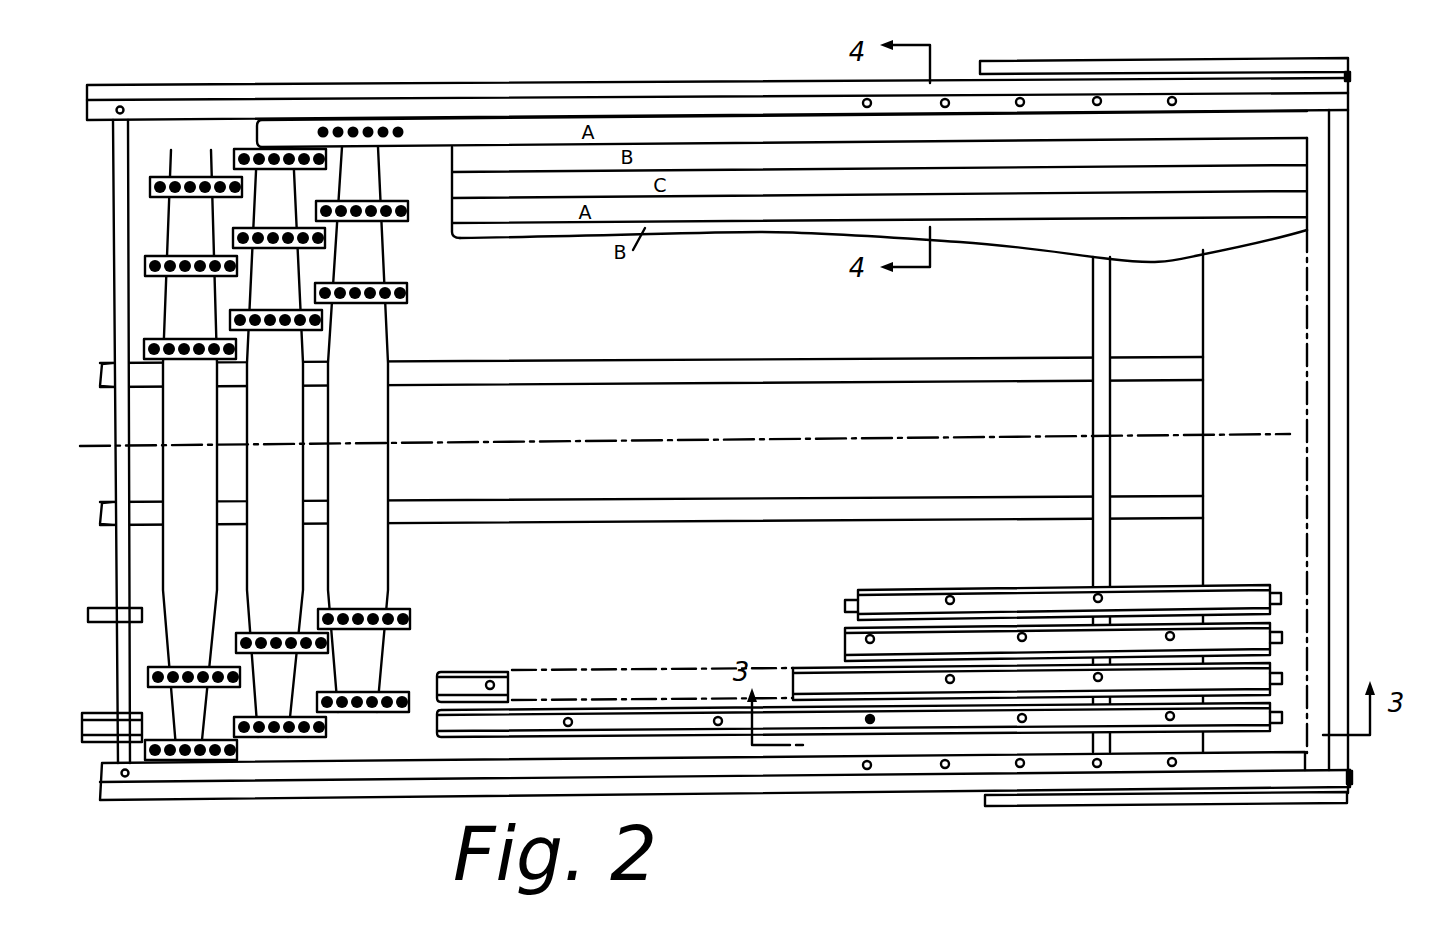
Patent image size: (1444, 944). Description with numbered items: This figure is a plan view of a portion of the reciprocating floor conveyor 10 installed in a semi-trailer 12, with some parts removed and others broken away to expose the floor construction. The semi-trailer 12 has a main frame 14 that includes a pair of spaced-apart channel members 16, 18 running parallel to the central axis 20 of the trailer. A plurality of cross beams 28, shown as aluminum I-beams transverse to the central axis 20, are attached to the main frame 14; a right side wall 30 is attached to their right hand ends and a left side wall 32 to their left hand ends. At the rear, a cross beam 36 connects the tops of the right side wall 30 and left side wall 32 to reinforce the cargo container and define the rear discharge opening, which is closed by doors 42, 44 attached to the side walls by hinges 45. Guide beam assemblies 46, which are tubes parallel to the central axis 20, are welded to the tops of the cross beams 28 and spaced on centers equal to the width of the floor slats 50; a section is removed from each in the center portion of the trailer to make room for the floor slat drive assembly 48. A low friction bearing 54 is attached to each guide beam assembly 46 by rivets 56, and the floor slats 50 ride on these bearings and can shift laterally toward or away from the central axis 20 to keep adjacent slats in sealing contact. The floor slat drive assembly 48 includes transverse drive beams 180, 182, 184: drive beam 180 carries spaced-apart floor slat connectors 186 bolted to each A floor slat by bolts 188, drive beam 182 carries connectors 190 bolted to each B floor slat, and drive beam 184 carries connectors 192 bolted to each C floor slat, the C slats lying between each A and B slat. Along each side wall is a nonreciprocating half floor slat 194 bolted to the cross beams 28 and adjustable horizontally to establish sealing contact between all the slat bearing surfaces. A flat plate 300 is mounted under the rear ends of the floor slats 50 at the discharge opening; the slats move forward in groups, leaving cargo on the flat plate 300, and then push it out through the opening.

The reciprocating floor conveyor 10 is at (1322, 147).
The semi-trailer 12 is at (725, 798).
The main frame 14 is at (1172, 343).
The channel member 16 is at (975, 370).
The channel member 18 is at (1067, 508).
The central axis 20 is at (1257, 435).
The cross beam 28 is at (1097, 315).
The right side wall 30 is at (652, 88).
The left side wall 32 is at (860, 787).
The cross beam 36 is at (1342, 212).
The door 42 is at (1203, 40).
The door 44 is at (1187, 798).
The hinge 45 is at (1350, 72).
The guide beam assembly 46 is at (1282, 638).
The floor slat drive assembly 48 is at (219, 408).
The floor slat 50 is at (732, 125).
The bearing 54 is at (678, 636).
The rivet 56 is at (948, 598).
The transverse drive beam 180 is at (416, 429).
The transverse drive beam 182 is at (330, 443).
The transverse drive beam 184 is at (207, 490).
The floor slat connector 186 is at (410, 295).
The bolt 188 is at (368, 118).
The floor slat connector 190 is at (338, 647).
The floor slat connector 192 is at (211, 177).
The half floor slat 194 is at (525, 105).
The flat plate 300 is at (1318, 555).